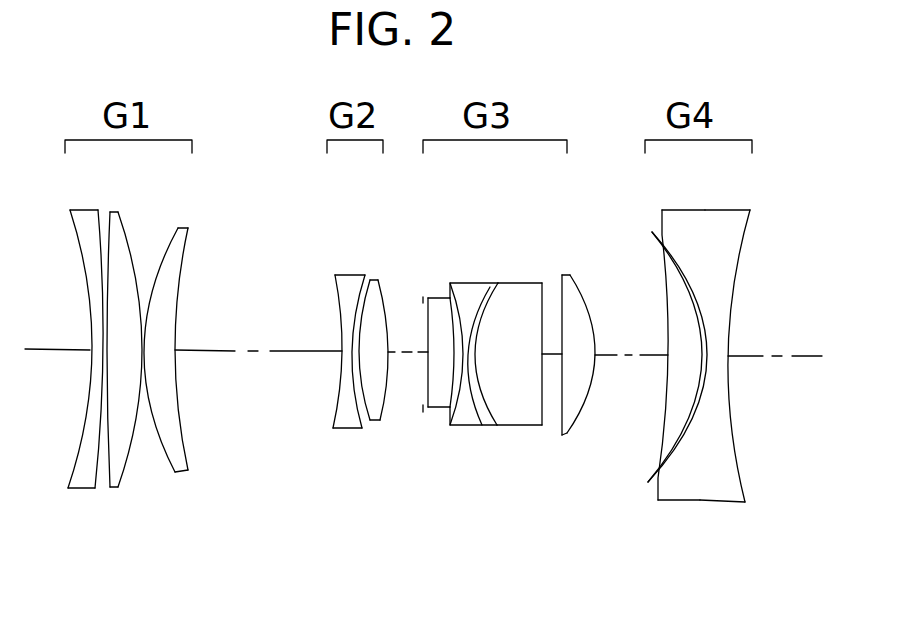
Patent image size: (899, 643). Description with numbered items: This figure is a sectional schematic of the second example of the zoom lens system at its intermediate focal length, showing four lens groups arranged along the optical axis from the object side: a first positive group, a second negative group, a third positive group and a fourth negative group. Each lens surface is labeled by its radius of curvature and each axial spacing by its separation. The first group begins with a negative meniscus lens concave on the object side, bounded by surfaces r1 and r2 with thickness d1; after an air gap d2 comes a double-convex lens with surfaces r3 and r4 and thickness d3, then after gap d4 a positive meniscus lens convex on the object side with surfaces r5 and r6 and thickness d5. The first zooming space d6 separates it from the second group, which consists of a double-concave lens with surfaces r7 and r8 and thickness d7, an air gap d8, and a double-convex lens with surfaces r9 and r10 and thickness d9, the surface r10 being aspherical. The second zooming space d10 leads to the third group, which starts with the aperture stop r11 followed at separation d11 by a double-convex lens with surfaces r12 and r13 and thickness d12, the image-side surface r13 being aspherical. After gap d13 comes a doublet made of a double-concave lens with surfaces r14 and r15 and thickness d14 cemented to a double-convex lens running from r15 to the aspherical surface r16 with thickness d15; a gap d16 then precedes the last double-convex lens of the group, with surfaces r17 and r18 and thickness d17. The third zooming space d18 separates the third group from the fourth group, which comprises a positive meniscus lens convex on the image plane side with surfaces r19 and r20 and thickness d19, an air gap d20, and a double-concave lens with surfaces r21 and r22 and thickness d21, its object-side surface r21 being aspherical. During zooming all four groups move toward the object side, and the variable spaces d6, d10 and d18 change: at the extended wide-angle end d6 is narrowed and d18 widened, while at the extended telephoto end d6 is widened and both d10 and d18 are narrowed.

The object-side surface of negative meniscus lens r1 is at (80, 257).
The image-side surface of negative meniscus lens r2 is at (100, 253).
The object-side surface of first-group double-convex lens r3 is at (107, 235).
The image-side surface of first-group double-convex lens r4 is at (130, 240).
The object-side surface of positive meniscus lens r5 is at (157, 253).
The image-side surface of positive meniscus lens r6 is at (185, 258).
The object-side surface of double-concave lens r7 is at (335, 307).
The image-side surface of double-concave lens r8 is at (352, 287).
The object-side surface of second-group double-convex lens r9 is at (370, 287).
The aspherical image-side surface of second-group double-convex lens r10 is at (387, 307).
The aperture stop r11 is at (422, 325).
The object-side surface of third-group double-convex lens r12 is at (443, 317).
The aspherical image-side surface of third-group double-convex lens r13 is at (468, 317).
The object-side surface of doublet double-concave lens r14 is at (487, 287).
The cemented surface of doublet r15 is at (510, 287).
The aspherical image-side surface of doublet r16 is at (535, 302).
The object-side surface of last third-group double-convex lens r17 is at (558, 295).
The image-side surface of last third-group double-convex lens r18 is at (587, 297).
The object-side surface of fourth-group positive meniscus lens r19 is at (655, 267).
The image-side surface of fourth-group positive meniscus lens r20 is at (668, 257).
The aspherical object-side surface of fourth-group double-concave lens r21 is at (688, 257).
The image-side surface of fourth-group double-concave lens r22 is at (743, 247).
The thickness of negative meniscus lens d1 is at (98, 350).
The air separation between first and second lenses d2 is at (107, 215).
The thickness of first-group double-convex lens d3 is at (122, 349).
The air separation between second and third lenses d4 is at (141, 375).
The thickness of positive meniscus lens d5 is at (168, 350).
The first zooming space d6 is at (259, 371).
The thickness of double-concave lens d7 is at (348, 355).
The air separation within second lens group d8 is at (353, 383).
The thickness of second-group double-convex lens d9 is at (374, 360).
The second zooming space d10 is at (410, 373).
The separation between aperture stop and double-convex lens d11 is at (432, 422).
The thickness of third-group double-convex lens d12 is at (445, 353).
The air separation between double-convex lens and doublet d13 is at (455, 380).
The thickness of doublet double-concave lens d14 is at (478, 400).
The thickness of doublet double-convex lens d15 is at (517, 354).
The air separation between doublet and last third-group lens d16 is at (556, 360).
The thickness of last third-group double-convex lens d17 is at (574, 360).
The third zooming space d18 is at (630, 375).
The thickness of fourth-group positive meniscus lens d19 is at (682, 357).
The air separation within fourth lens group d20 is at (680, 443).
The thickness of fourth-group double-concave lens d21 is at (718, 362).